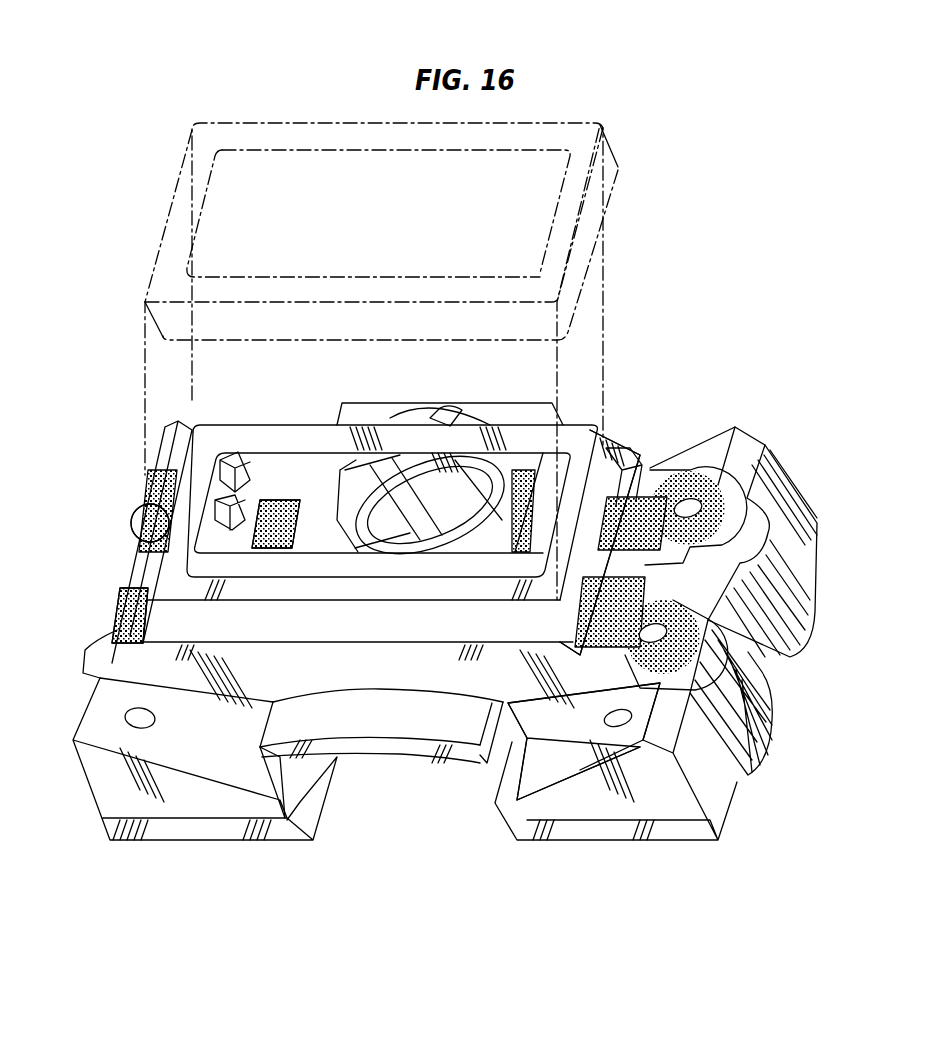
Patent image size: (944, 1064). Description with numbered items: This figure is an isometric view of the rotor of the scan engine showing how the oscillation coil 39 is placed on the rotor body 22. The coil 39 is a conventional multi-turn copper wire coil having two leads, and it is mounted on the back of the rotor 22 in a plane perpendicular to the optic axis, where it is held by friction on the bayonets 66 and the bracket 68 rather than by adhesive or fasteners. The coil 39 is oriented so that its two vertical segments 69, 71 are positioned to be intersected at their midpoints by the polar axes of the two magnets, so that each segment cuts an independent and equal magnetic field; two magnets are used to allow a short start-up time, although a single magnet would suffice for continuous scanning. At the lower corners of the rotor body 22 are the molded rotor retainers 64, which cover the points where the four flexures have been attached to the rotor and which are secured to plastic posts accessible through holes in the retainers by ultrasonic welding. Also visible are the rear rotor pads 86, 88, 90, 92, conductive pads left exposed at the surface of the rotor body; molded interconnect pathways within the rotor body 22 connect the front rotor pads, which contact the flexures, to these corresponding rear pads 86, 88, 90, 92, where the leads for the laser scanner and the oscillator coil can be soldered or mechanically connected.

The rotor body 22 is at (610, 808).
The oscillation coil 39 is at (257, 430).
The rotor retainers 64 is at (203, 827).
The bayonets 66 is at (212, 512).
The bracket 68 is at (423, 563).
The vertical segment of the coil 69 is at (177, 522).
The vertical segment of the coil 71 is at (573, 487).
The rear rotor pad 86 is at (253, 525).
The rear rotor pad 88 is at (127, 612).
The rear rotor pad 90 is at (643, 497).
The rear rotor pad 92 is at (735, 598).